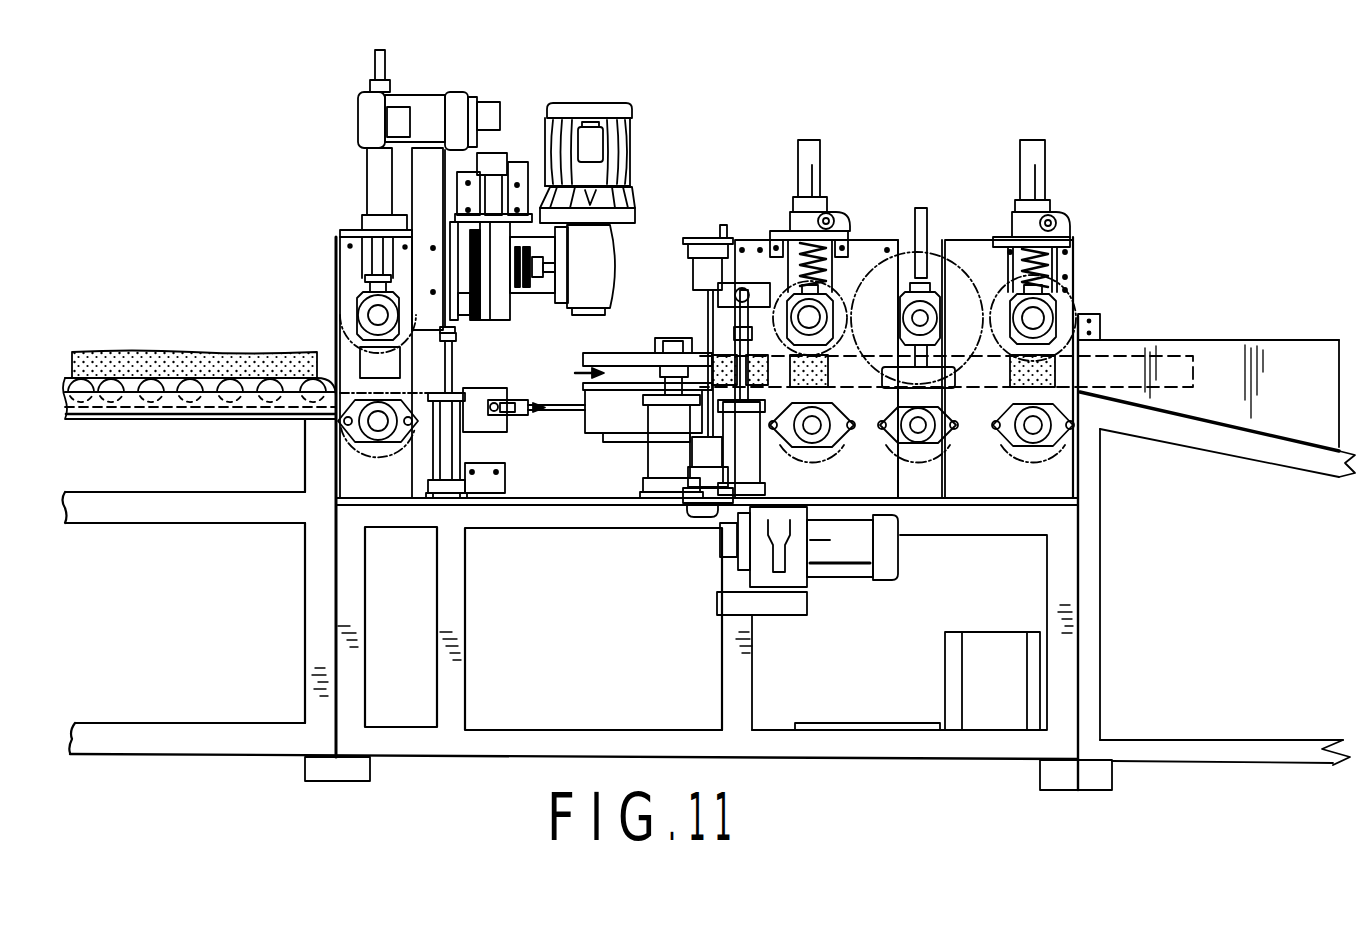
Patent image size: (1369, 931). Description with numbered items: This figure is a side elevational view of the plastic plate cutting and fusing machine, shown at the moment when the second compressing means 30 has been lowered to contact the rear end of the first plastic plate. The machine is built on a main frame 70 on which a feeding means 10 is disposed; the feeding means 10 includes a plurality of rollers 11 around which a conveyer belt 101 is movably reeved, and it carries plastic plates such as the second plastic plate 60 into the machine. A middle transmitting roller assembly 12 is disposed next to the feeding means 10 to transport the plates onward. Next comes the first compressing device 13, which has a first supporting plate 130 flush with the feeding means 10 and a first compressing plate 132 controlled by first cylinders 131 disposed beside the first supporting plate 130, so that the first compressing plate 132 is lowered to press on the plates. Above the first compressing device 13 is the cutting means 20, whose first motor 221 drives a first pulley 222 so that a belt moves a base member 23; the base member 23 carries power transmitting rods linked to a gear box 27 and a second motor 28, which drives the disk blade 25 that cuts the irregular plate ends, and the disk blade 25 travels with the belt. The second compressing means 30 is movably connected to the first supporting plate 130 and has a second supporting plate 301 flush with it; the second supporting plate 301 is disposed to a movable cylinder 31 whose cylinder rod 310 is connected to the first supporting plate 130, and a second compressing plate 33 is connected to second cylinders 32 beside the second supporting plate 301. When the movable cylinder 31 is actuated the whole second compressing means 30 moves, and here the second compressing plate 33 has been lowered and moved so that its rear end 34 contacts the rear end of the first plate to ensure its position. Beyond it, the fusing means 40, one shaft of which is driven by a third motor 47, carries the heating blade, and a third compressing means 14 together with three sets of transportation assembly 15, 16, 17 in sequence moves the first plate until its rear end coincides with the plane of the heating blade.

The feeding means 10 is at (210, 398).
The conveyer belt 101 is at (133, 378).
The rollers 11 is at (272, 382).
The middle transmitting roller assembly 12 is at (333, 339).
The first compressing device 13 is at (432, 394).
The first supporting plate 130 is at (508, 440).
The first cylinders 131 is at (458, 462).
The first compressing plate 132 is at (466, 333).
The third compressing means 14 is at (766, 449).
The transportation assembly 15 is at (824, 447).
The transportation assembly 16 is at (921, 449).
The transportation assembly 17 is at (1026, 450).
The cutting means 20 is at (533, 150).
The first motor 221 is at (418, 103).
The first pulley 222 is at (492, 107).
The base member 23 is at (455, 223).
The disk blade 25 is at (466, 371).
The gear box 27 is at (597, 245).
The second motor 28 is at (625, 155).
The second compressing means 30 is at (647, 368).
The second supporting plate 301 is at (616, 391).
The movable cylinder 31 is at (580, 434).
The cylinder rod 310 is at (496, 428).
The second cylinders 32 is at (633, 463).
The second compressing plate 33 is at (600, 358).
The rear end of the second compressing plate 34 is at (671, 396).
The fusing means 40 is at (689, 491).
The third motor 47 is at (843, 565).
The second plastic plate 60 is at (93, 352).
The main frame 70 is at (312, 584).